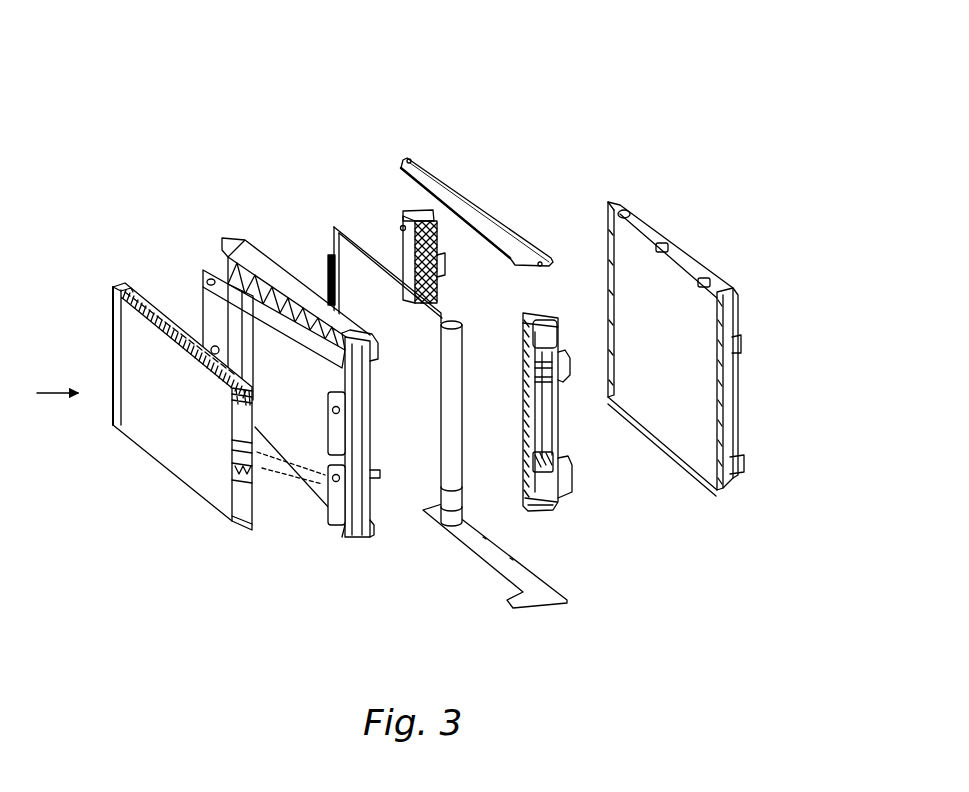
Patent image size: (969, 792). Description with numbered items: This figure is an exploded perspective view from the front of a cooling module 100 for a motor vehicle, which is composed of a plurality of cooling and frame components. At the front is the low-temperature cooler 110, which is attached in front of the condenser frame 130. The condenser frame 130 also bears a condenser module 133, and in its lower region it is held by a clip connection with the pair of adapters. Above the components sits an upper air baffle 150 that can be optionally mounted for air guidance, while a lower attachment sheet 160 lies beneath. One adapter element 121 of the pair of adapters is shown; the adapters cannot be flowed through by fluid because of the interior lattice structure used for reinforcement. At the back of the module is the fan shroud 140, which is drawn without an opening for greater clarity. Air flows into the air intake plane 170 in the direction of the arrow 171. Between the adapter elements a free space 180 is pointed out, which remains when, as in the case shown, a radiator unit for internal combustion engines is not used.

The cooling module 100 is at (643, 96).
The low-temperature cooler 110 is at (111, 276).
The adapter element 121 is at (396, 198).
The condenser frame 130 is at (231, 216).
The condenser module 133 is at (333, 206).
The fan shroud 140 is at (658, 210).
The upper air baffle 150 is at (430, 150).
The lower attachment sheet 160 is at (562, 577).
The air intake plane 170 is at (178, 455).
The arrow 171 is at (56, 388).
The free space 180 is at (482, 316).